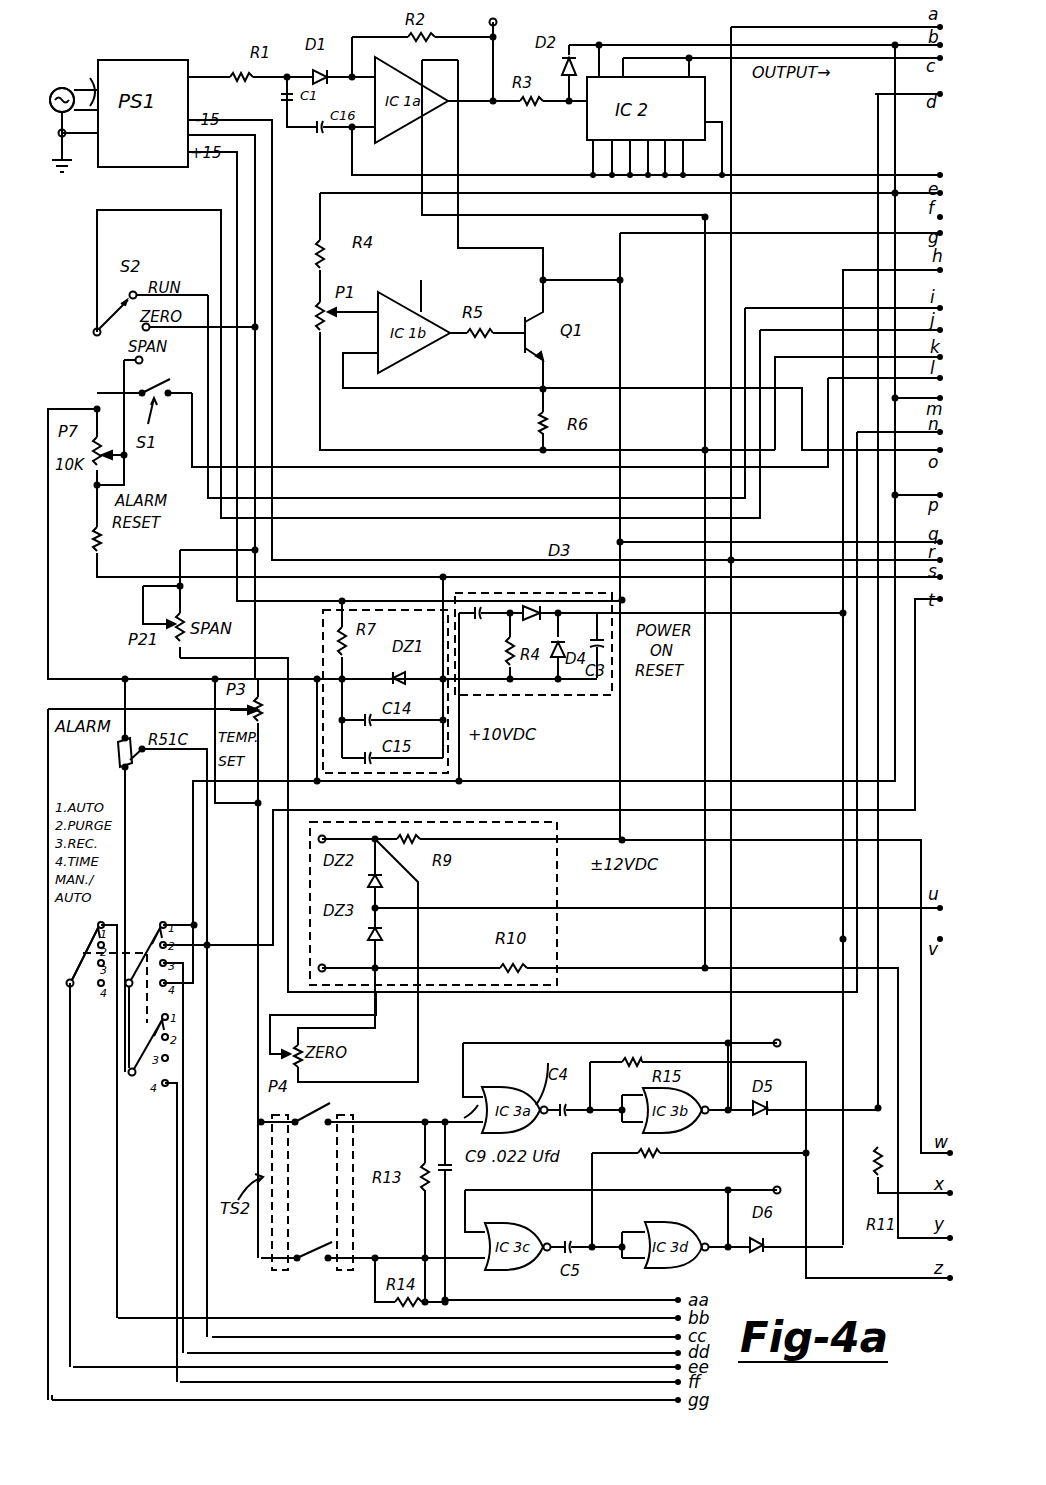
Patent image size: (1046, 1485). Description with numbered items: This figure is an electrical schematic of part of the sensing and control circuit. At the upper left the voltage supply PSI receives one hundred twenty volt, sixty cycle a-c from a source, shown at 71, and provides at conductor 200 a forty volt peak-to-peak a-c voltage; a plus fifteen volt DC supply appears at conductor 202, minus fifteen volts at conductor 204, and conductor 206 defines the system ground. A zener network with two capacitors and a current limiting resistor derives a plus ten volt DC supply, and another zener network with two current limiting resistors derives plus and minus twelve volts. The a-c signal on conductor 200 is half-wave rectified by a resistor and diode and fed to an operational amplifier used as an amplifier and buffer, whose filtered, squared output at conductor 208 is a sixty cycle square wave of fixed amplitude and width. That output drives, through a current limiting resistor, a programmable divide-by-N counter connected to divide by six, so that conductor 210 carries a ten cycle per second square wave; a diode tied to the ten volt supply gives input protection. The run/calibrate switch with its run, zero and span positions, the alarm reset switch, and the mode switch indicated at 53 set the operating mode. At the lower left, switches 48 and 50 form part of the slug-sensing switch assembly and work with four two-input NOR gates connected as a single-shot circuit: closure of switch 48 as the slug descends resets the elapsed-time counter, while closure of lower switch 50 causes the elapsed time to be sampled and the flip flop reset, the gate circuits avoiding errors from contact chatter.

The AC power input 71 is at (88, 78).
The conductor 200 is at (230, 55).
The conductor 202 is at (235, 185).
The conductor 204 is at (280, 96).
The conductor 206 is at (255, 165).
The conductor 208 is at (478, 104).
The conductor 210 is at (668, 60).
The switch 48 is at (335, 1102).
The lower switch 50 is at (312, 1262).
The mode selector switch S3 53 is at (74, 934).